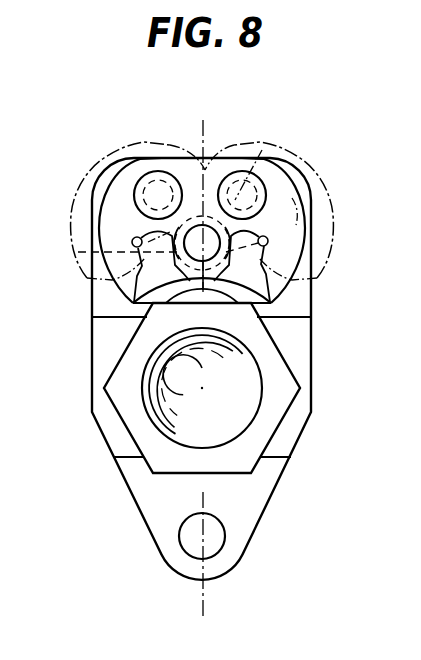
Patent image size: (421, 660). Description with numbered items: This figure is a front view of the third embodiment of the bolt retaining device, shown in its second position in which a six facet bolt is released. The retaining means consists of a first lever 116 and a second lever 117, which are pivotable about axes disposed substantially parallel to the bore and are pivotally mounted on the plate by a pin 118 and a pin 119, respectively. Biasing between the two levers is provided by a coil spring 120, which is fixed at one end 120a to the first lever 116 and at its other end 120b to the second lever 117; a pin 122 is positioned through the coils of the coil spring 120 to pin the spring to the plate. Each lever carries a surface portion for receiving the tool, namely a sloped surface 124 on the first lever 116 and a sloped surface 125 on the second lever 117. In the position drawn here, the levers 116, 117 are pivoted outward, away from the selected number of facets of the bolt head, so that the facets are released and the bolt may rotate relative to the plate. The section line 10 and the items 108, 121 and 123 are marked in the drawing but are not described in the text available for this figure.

The section line 10- 10 is at (214, 127).
The mounting hole 108 is at (188, 545).
The first lever 116 is at (103, 188).
The second lever 117 is at (292, 198).
The pin 118 is at (138, 190).
The pin 119 is at (263, 183).
The coil spring 120 is at (78, 251).
The end of coil spring 120a is at (132, 238).
The end of coil spring 120b is at (268, 238).
The left lobe outline 121 is at (87, 280).
The pin 122 is at (200, 222).
The right lobe outline 123 is at (317, 280).
The sloped surface 124 is at (185, 304).
The sloped surface 125 is at (297, 321).